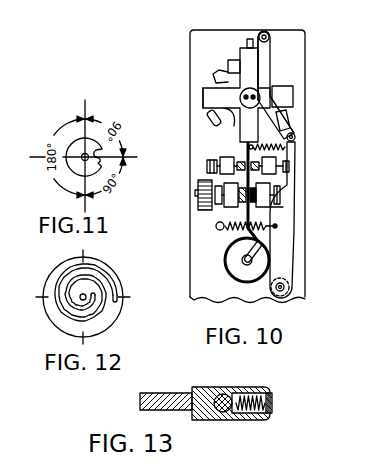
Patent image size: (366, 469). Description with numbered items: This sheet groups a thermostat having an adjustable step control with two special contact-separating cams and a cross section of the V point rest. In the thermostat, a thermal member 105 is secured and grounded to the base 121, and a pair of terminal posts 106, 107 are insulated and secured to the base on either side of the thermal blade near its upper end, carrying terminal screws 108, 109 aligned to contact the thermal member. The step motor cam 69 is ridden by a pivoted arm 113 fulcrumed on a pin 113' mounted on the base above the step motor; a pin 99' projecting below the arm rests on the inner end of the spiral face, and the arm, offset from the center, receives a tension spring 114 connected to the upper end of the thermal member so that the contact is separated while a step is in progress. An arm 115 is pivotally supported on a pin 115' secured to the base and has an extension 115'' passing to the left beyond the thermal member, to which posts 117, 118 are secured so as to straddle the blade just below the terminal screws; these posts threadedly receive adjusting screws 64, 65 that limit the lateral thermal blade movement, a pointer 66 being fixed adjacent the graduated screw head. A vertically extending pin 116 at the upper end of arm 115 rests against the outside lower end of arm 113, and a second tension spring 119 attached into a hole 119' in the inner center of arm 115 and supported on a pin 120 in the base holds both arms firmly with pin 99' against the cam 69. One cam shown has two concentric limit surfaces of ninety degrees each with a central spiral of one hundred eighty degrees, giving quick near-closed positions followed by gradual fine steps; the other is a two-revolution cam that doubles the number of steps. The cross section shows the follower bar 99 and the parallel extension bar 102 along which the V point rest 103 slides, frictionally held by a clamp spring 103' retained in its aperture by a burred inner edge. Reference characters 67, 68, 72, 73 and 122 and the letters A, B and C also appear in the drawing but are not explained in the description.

In FIG. 10, the adjusting screw 64 is at (281, 196).
In FIG. 10, the adjusting screw 65 is at (200, 206).
In FIG. 10, the pointer 66 is at (197, 193).
In FIG. 10, the cross slide arm 67 is at (206, 91).
In FIG. 10, the slide lug 68 is at (214, 76).
In FIG. 10, the spiral cam 69 is at (240, 99).
In FIG. 10, the pivot pin 72 is at (262, 32).
In FIG. 10, the stop block 73 is at (250, 40).
In FIG. 13, the follower bar 99 is at (166, 389).
In FIG. 10, the pin 99' is at (298, 98).
In FIG. 13, the extension bar 102 is at (223, 394).
In FIG. 13, the V point rest 103 is at (257, 387).
In FIG. 13, the clamp spring 103' is at (293, 399).
In FIG. 10, the thermal member 105 is at (226, 261).
In FIG. 10, the terminal post 106 is at (223, 157).
In FIG. 10, the terminal post 107 is at (248, 185).
In FIG. 10, the terminal screw 108 is at (207, 163).
In FIG. 10, the terminal screw 109 is at (290, 165).
In FIG. 10, the pivoted arm 113 is at (297, 74).
In FIG. 10, the pin 113' is at (283, 52).
In FIG. 10, the tension spring 114 is at (285, 141).
In FIG. 10, the arm 115 is at (303, 220).
In FIG. 10, the pin 115' is at (305, 286).
In FIG. 10, the extension 115'' is at (205, 191).
In FIG. 10, the pin 116 is at (296, 137).
In FIG. 10, the post 117 is at (284, 206).
In FIG. 10, the post 118 is at (231, 203).
In FIG. 10, the tension spring 119 is at (237, 236).
In FIG. 10, the hole 119' is at (306, 229).
In FIG. 10, the pin 120 is at (216, 226).
In FIG. 10, the base 121 is at (307, 42).
In FIG. 12, the spiral spring 122 is at (56, 310).
In FIG. 10, the lever arm A is at (287, 124).
In FIG. 10, the slide block B is at (228, 62).
In FIG. 10, the slide pin C is at (224, 121).